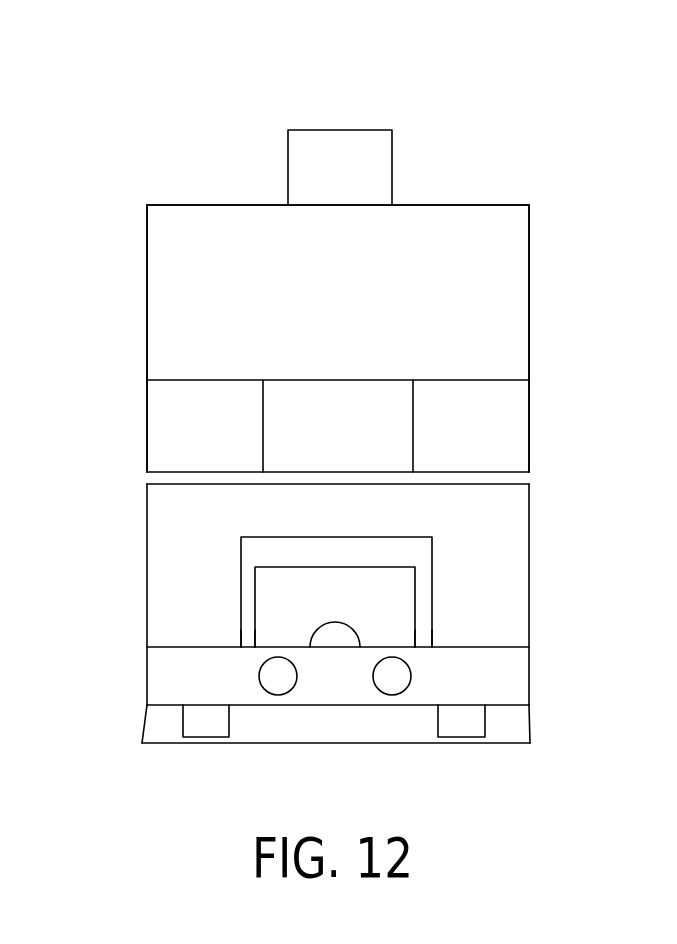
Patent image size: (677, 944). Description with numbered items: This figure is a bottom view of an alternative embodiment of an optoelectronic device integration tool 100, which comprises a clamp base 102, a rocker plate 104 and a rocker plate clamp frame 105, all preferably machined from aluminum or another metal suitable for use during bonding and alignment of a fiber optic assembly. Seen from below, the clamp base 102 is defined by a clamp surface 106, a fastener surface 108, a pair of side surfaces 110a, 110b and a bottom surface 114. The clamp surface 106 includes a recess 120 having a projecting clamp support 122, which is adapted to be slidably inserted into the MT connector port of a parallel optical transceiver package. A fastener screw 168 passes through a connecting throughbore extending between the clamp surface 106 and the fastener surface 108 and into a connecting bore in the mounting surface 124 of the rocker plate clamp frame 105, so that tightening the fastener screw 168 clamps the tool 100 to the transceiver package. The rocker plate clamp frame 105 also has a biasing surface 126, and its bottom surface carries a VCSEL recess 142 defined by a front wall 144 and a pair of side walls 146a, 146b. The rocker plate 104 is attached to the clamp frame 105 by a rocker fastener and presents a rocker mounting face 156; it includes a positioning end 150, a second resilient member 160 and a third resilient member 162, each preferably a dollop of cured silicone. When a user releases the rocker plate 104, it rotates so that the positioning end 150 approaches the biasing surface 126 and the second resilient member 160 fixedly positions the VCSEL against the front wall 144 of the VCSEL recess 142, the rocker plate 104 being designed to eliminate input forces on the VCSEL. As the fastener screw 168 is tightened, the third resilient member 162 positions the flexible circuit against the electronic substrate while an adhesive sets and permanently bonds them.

The optoelectronic device integration tool 100 is at (140, 66).
The clamp base 102 is at (509, 205).
The rocker plate 104 is at (523, 702).
The rocker plate clamp frame 105 is at (529, 565).
The clamp surface 106 is at (475, 473).
The fastener surface 108 is at (451, 205).
The side surface 110a is at (529, 280).
The side surface 110b is at (147, 273).
The bottom surface 114 is at (197, 230).
The recess 120 is at (202, 423).
The projecting clamp support 122 is at (330, 417).
The mounting surface 124 is at (192, 480).
The biasing surface 126 is at (495, 647).
The VCSEL recess 142 is at (277, 598).
The front wall 144 is at (302, 567).
The side wall 146a is at (417, 625).
The side wall 146b is at (253, 632).
The positioning end 150 is at (497, 667).
The rocker mounting face 156 is at (335, 743).
The second resilient member 160 is at (335, 622).
The third resilient member 162 is at (275, 676).
The fastener screw 168 is at (342, 130).